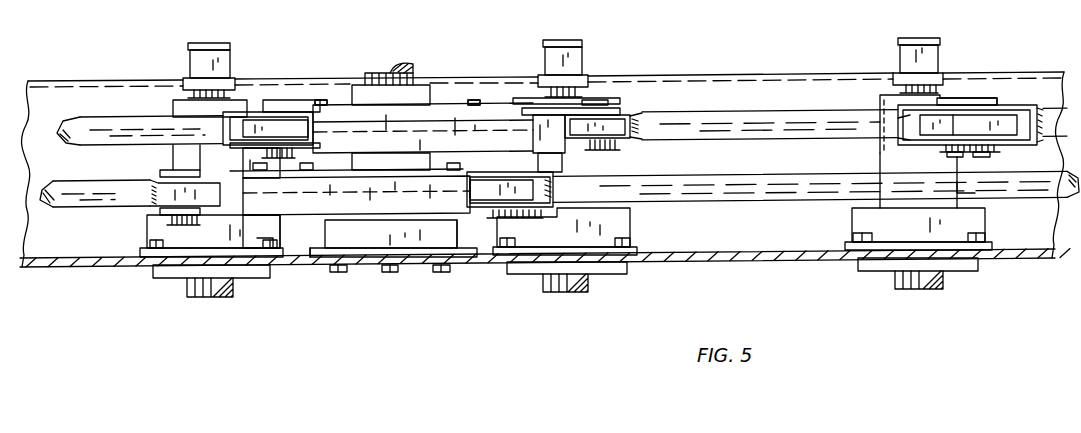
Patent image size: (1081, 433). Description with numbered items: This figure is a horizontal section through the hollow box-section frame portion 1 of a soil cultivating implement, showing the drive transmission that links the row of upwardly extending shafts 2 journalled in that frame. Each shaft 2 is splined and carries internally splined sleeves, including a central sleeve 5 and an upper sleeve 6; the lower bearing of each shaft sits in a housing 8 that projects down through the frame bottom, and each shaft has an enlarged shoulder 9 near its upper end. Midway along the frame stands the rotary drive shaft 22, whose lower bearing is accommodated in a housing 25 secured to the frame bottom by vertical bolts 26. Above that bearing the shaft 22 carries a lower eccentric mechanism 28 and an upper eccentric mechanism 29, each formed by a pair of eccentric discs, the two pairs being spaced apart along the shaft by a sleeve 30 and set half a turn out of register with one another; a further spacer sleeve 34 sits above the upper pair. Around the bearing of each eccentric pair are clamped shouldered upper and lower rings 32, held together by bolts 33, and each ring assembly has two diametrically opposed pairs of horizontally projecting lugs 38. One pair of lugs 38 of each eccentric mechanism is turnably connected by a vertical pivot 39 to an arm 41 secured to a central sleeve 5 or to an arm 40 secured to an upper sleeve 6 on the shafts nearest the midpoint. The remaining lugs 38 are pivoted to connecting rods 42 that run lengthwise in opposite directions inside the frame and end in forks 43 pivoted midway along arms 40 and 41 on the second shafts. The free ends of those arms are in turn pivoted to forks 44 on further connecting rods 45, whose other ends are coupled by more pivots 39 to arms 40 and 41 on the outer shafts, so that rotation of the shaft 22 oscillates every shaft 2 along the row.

The hollow box-section frame portion 1 is at (60, 47).
The shaft 2 is at (187, 50).
The central sleeve 5 is at (188, 166).
The upper sleeve 6 is at (173, 103).
The housing 8 is at (152, 275).
The shoulder 9 is at (230, 80).
The shaft 22 is at (407, 73).
The housing 25 is at (430, 238).
The bolts 26 is at (360, 272).
The lower eccentric mechanism 28 is at (318, 220).
The upper eccentric mechanism 29 is at (340, 102).
The sleeve 30 is at (367, 160).
The rings 32 is at (427, 137).
The bolts 33 is at (475, 100).
The spacer sleeve 34 is at (410, 95).
The lugs 38 is at (255, 203).
The pivot 39 is at (173, 228).
The arm 40 is at (290, 130).
The arm 41 is at (483, 197).
The connecting rod 42 is at (85, 181).
The fork 43 is at (900, 123).
The fork 44 is at (280, 107).
The connecting rod 45 is at (80, 114).